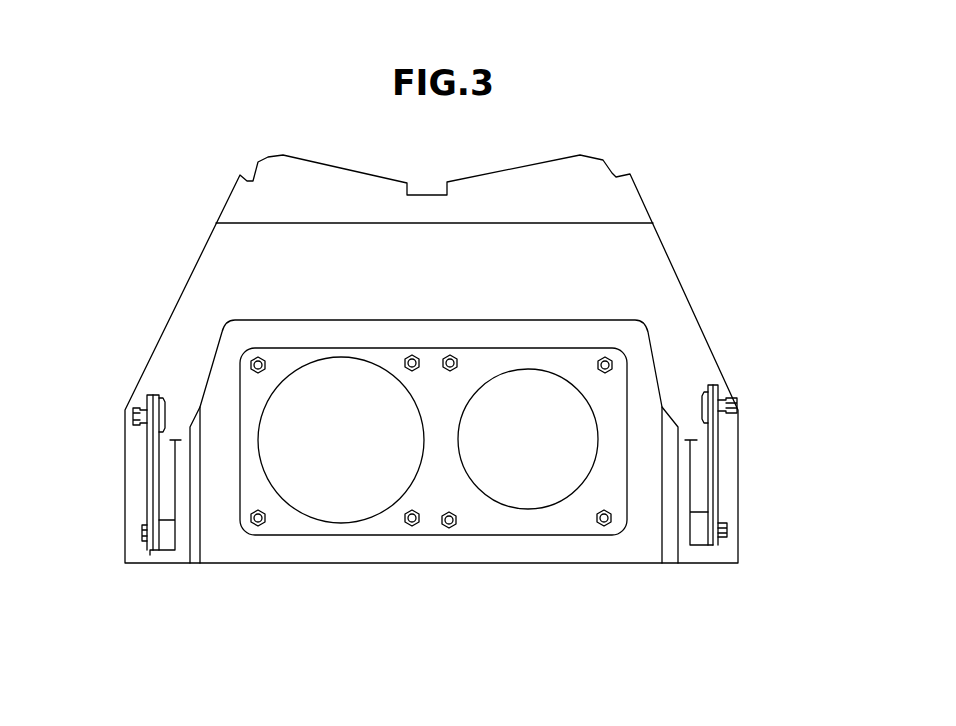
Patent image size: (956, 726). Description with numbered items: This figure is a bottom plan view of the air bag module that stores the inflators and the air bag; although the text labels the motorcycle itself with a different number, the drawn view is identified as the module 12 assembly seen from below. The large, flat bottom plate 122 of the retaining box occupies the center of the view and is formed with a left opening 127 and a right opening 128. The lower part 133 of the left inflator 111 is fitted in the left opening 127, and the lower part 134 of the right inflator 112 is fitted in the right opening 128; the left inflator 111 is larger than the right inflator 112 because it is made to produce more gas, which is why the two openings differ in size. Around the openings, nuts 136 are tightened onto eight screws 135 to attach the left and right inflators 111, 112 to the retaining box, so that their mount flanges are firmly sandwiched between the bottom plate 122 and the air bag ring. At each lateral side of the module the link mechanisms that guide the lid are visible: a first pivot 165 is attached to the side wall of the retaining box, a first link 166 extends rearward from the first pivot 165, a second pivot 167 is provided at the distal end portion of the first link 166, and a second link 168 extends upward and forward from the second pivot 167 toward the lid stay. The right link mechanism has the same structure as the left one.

The housing 12 is at (740, 337).
The left inflator 111 is at (346, 542).
The right inflator 112 is at (542, 521).
The bottom plate 122 is at (617, 393).
The left opening 127 is at (306, 503).
The right opening 128 is at (553, 491).
The lower part of the left inflator 133 is at (365, 482).
The lower part of the right inflator 134 is at (523, 460).
The screw 135 is at (259, 357).
The nut 136 is at (253, 357).
The first pivot 165 is at (142, 533).
The first link 166 is at (148, 553).
The second pivot 167 is at (133, 417).
The second link 168 is at (159, 553).